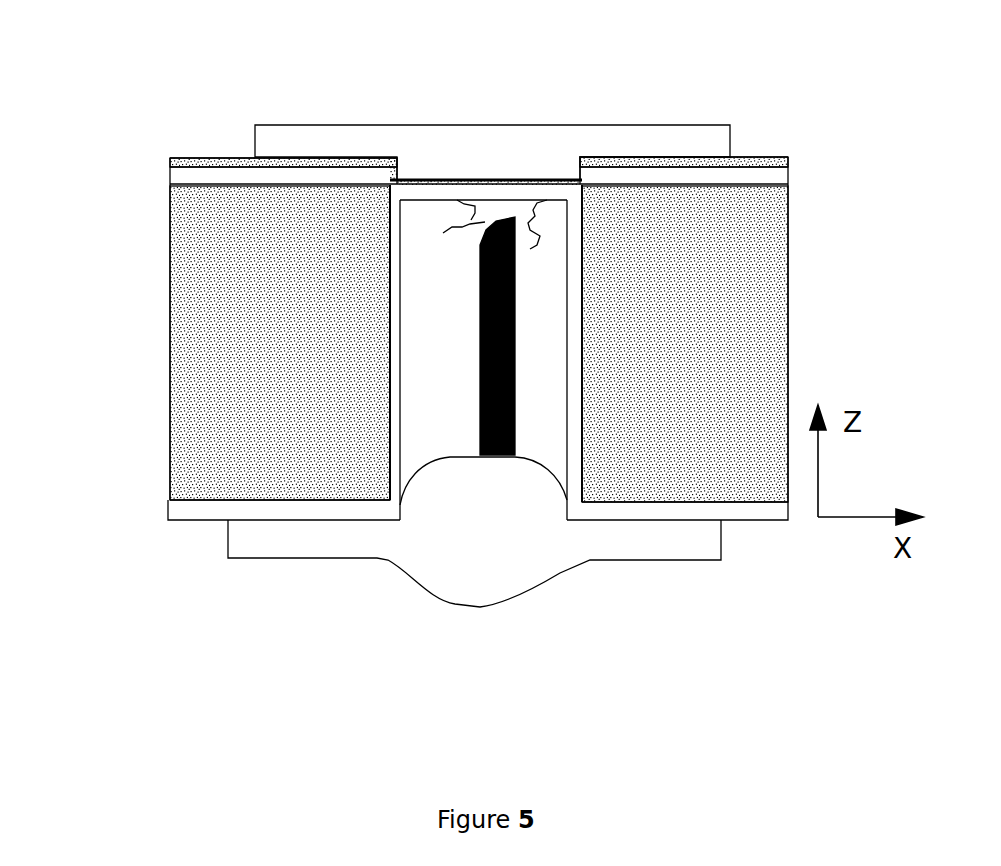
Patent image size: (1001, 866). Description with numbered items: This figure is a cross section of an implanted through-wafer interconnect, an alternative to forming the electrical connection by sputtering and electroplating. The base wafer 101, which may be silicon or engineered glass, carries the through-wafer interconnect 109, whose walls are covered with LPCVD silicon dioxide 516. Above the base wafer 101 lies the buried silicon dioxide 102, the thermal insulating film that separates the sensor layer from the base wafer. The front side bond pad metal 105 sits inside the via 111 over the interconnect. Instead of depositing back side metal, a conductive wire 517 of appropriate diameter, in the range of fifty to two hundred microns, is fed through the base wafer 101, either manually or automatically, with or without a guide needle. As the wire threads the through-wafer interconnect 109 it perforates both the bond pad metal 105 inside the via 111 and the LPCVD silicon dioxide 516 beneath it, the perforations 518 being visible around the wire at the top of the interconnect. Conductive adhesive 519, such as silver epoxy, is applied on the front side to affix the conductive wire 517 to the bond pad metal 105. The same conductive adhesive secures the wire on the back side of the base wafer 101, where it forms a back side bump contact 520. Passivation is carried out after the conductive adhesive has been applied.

The base wafer 101 is at (178, 299).
The buried silicon dioxide 102 is at (204, 160).
The bond pad metal 105 is at (767, 139).
The through-wafer interconnect 109 is at (602, 348).
The via 111 is at (551, 165).
The LPCVD silicon dioxide 516 is at (378, 336).
The conductive wire 517 is at (539, 375).
The perforation 518 is at (554, 240).
The conductive adhesive 519 is at (309, 113).
The back side bump contact 520 is at (298, 569).